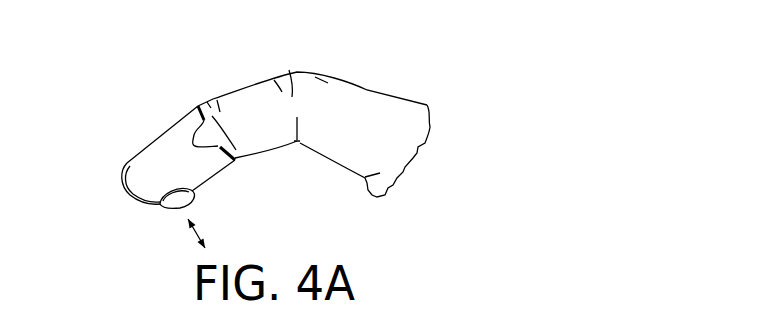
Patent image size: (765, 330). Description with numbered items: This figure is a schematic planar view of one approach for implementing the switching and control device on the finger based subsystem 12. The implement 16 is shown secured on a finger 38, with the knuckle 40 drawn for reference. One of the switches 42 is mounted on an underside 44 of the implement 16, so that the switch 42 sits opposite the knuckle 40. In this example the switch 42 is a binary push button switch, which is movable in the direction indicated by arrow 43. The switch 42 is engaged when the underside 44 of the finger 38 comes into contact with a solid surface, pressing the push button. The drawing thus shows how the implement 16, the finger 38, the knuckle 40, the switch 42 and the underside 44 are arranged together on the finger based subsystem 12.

The finger based subsystem 12 is at (132, 130).
The implement 16 is at (172, 120).
The finger 38 is at (363, 138).
The knuckle 40 is at (217, 96).
The switch 42 is at (166, 214).
The arrow 43 is at (195, 232).
The underside 44 is at (205, 179).